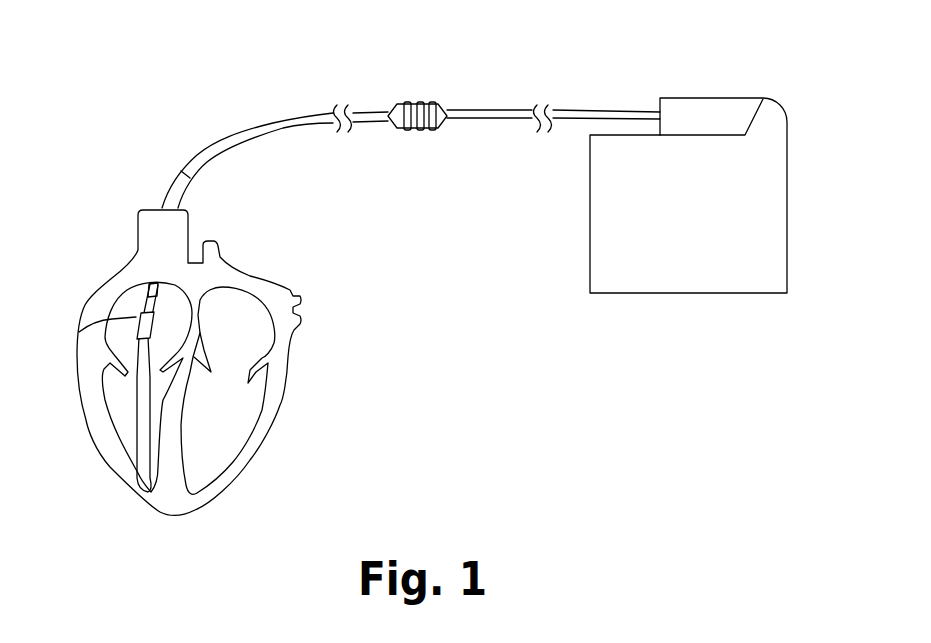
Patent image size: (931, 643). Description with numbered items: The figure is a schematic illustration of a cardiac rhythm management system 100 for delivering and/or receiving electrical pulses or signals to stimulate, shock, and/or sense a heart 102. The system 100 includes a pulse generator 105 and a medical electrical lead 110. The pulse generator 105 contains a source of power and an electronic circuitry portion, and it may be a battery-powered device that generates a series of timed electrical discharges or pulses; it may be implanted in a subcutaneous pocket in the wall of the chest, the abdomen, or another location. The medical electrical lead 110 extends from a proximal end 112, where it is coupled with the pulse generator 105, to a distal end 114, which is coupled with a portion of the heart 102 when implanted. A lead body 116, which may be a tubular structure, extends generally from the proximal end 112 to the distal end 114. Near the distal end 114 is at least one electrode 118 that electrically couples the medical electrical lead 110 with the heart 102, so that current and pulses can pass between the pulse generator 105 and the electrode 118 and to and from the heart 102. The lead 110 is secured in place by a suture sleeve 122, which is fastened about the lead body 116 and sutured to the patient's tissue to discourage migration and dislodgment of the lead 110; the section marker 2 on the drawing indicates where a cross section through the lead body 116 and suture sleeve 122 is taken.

The cardiac rhythm management system 100 is at (788, 48).
The heart 102 is at (97, 291).
The pulse generator 105 is at (787, 146).
The medical electrical lead 110 is at (218, 143).
The proximal end 112 is at (634, 111).
The distal end 114 is at (141, 475).
The lead body 116 is at (493, 123).
The electrode 118 is at (80, 331).
The suture sleeve 122 is at (417, 103).
The section line 2 is at (367, 120).